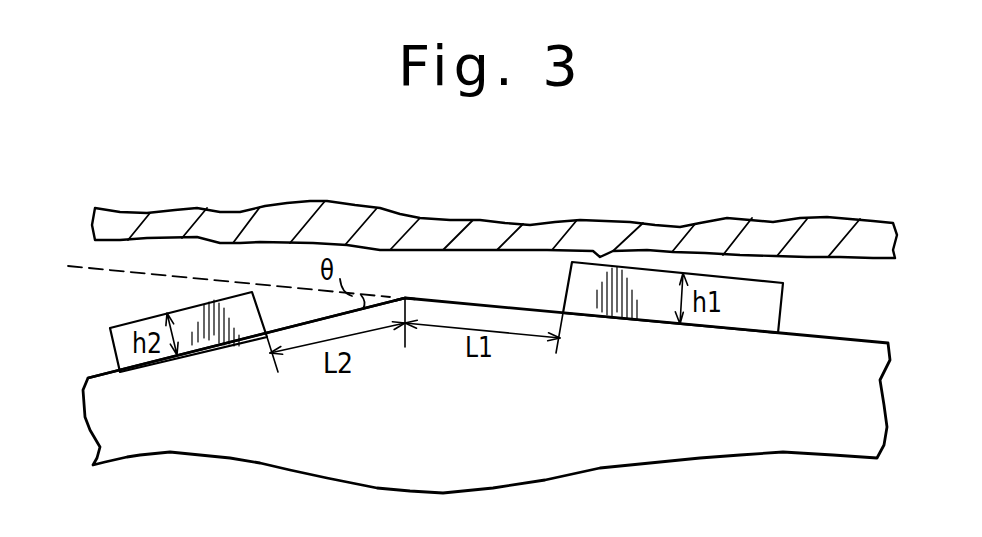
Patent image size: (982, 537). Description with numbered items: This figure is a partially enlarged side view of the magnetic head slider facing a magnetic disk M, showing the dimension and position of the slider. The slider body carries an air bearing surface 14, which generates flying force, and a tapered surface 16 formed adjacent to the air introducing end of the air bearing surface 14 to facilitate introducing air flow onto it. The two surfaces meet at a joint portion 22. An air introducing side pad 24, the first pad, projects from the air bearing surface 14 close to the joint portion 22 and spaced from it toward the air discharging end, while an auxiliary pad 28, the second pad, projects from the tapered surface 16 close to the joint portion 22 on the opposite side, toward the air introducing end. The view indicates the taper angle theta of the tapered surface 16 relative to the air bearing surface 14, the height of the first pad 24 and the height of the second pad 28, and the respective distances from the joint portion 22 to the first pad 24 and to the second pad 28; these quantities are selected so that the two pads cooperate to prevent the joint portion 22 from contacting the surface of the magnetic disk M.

The air bearing surface 14 is at (835, 336).
The tapered surface 16 is at (100, 375).
The joint portion 22 is at (400, 297).
The air introducing side pad 24 is at (772, 300).
The auxiliary pad 28 is at (125, 324).
The magnetic disk M is at (435, 232).